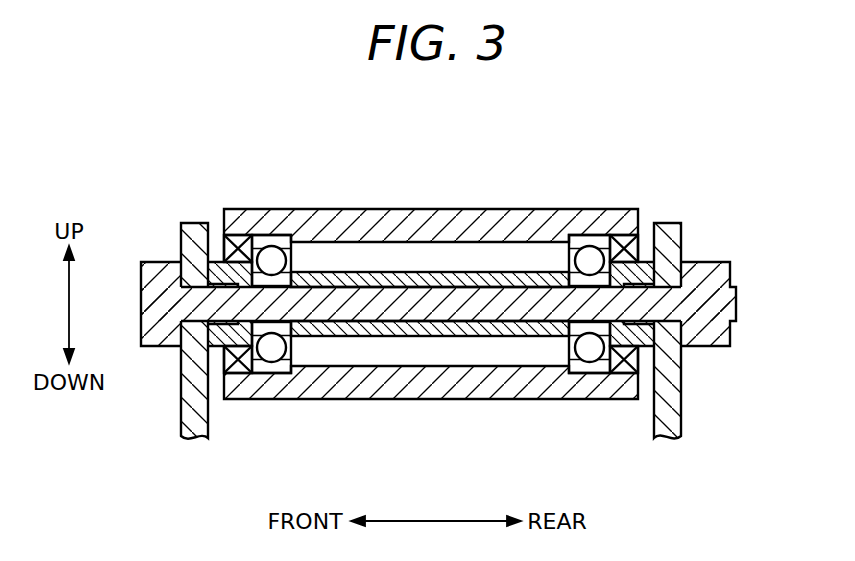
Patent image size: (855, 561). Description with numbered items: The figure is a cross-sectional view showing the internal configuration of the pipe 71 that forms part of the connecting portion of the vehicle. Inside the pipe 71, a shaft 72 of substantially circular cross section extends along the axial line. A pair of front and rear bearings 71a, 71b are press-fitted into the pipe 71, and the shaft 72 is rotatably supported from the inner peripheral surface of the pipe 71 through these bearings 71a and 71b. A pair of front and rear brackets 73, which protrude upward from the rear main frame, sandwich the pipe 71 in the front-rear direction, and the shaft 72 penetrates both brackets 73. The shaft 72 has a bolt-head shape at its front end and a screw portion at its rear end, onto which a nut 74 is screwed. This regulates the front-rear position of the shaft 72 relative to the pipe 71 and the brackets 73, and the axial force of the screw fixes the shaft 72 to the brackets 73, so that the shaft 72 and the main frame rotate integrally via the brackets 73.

The pipe 71 is at (527, 399).
The front bearing 71a is at (272, 246).
The rear bearing 71b is at (590, 246).
The shaft 72 is at (443, 323).
The brackets 73 is at (180, 388).
The nut 74 is at (730, 273).